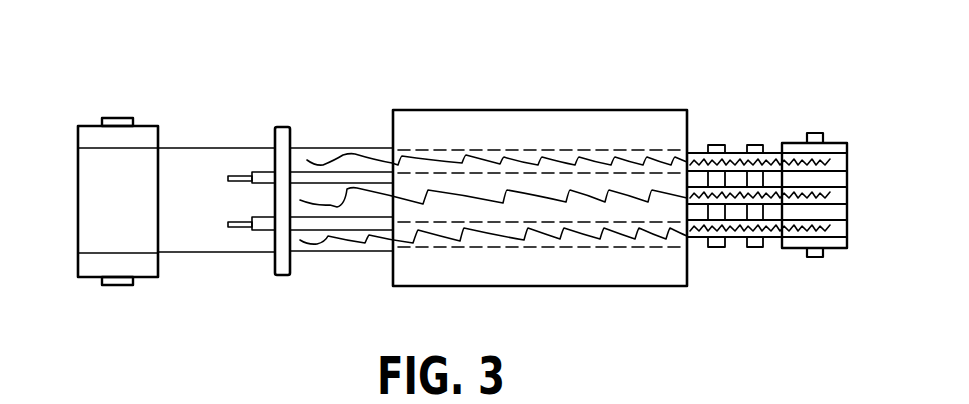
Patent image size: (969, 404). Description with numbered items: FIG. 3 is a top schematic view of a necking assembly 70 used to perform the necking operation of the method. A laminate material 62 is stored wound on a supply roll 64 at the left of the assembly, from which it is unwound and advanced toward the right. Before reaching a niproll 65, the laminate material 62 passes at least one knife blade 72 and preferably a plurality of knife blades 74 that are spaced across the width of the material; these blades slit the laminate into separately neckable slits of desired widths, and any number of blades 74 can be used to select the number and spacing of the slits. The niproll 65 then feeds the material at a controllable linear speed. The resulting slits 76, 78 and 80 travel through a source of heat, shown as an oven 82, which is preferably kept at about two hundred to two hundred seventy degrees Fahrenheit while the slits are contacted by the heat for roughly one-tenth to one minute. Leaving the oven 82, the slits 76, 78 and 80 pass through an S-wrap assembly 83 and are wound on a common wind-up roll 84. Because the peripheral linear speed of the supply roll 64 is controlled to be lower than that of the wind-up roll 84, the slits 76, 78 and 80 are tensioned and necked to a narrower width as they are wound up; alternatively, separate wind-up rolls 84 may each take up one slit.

The laminate material 62 is at (193, 148).
The supply roll 64 is at (88, 126).
The niproll 65 is at (285, 275).
The necking assembly 70 is at (566, 48).
The knife blade 72 is at (233, 175).
The knife blades 74 is at (233, 228).
The slit 76 is at (312, 147).
The slit 78 is at (335, 193).
The slit 80 is at (340, 243).
The oven 82 is at (503, 286).
The S-wrap assembly 83 is at (767, 135).
The wind-up roll 84 is at (842, 143).